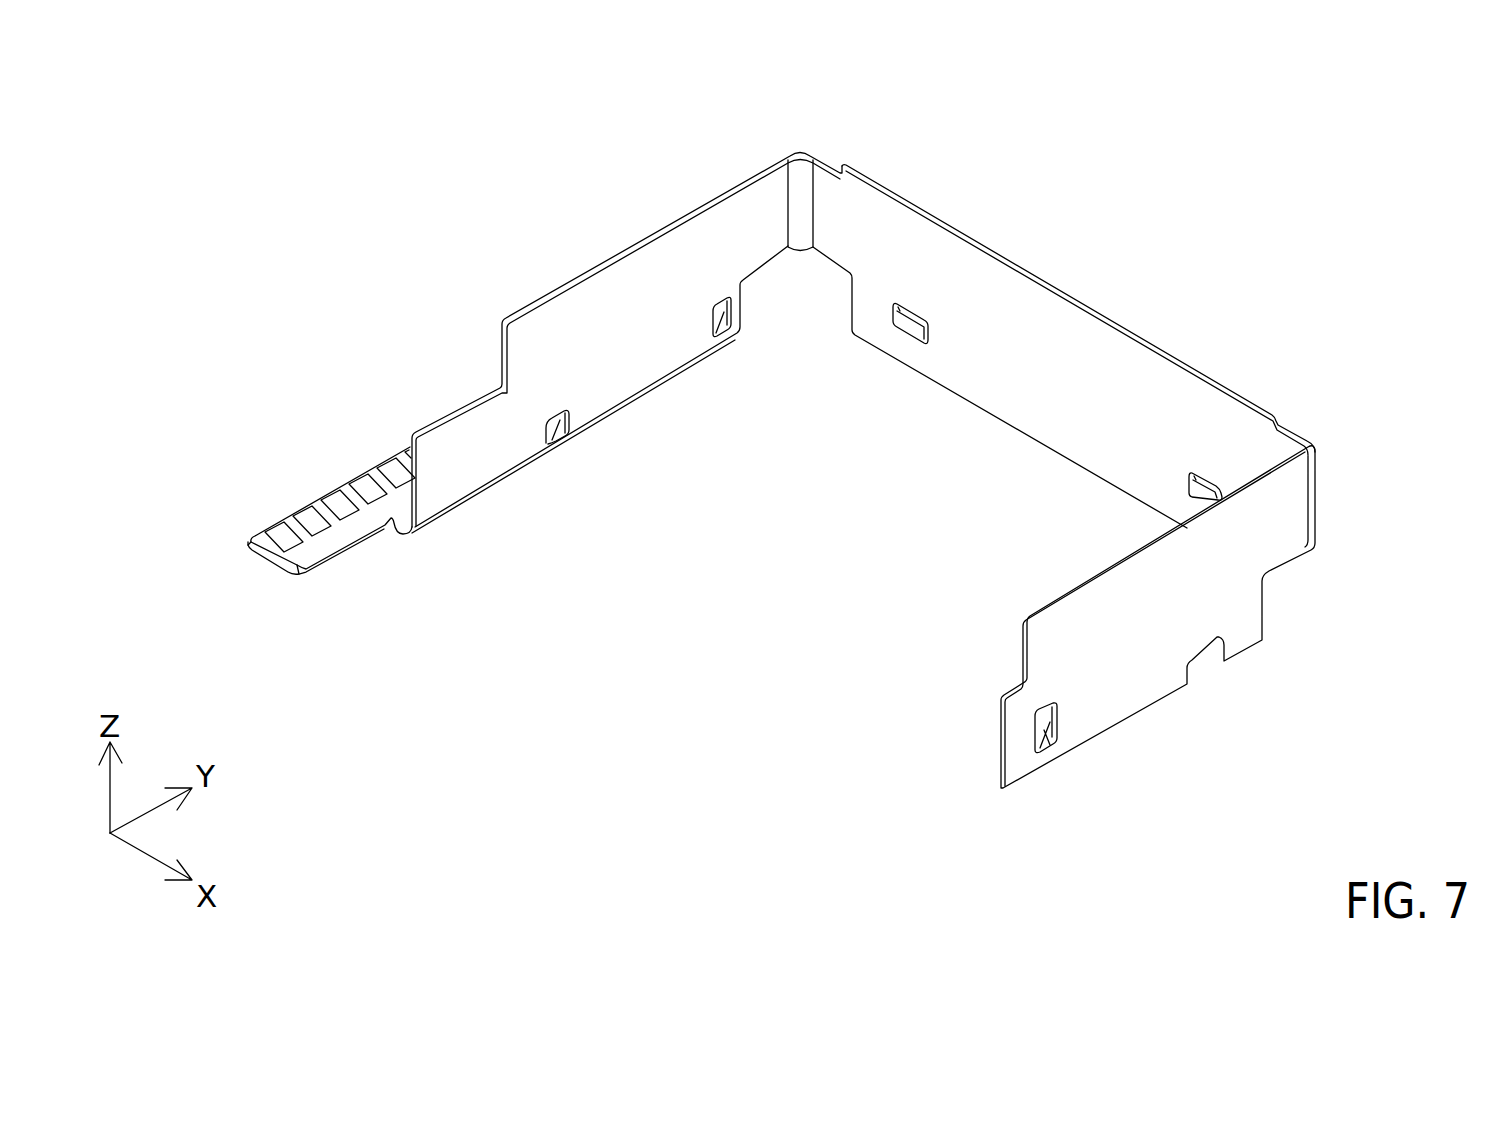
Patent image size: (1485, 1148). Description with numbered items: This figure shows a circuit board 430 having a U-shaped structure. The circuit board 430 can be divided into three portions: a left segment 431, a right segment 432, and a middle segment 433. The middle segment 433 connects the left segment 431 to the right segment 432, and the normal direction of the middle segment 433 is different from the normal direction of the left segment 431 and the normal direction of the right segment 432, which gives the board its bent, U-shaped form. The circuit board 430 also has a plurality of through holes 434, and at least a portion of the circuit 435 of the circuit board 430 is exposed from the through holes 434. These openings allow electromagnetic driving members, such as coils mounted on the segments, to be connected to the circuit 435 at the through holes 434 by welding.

The circuit board 430 is at (357, 120).
The left segment 431 is at (613, 303).
The right segment 432 is at (1223, 595).
The middle segment 433 is at (1057, 335).
The through holes 434 is at (557, 432).
The circuit 435 is at (565, 423).